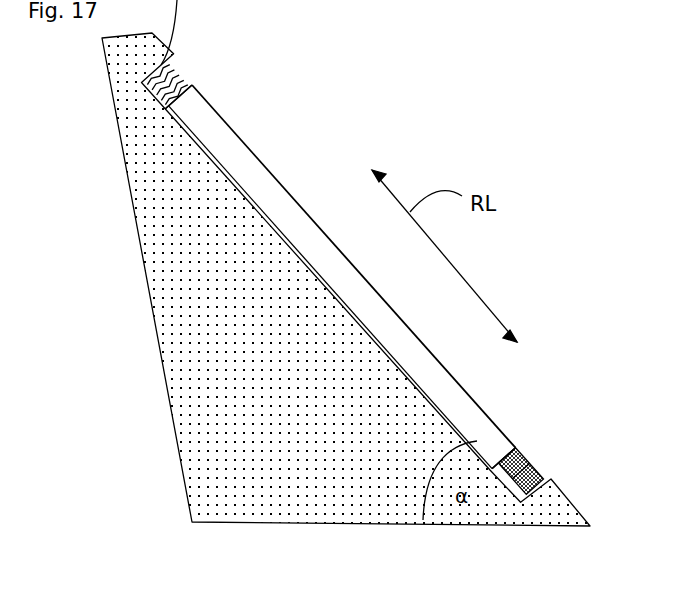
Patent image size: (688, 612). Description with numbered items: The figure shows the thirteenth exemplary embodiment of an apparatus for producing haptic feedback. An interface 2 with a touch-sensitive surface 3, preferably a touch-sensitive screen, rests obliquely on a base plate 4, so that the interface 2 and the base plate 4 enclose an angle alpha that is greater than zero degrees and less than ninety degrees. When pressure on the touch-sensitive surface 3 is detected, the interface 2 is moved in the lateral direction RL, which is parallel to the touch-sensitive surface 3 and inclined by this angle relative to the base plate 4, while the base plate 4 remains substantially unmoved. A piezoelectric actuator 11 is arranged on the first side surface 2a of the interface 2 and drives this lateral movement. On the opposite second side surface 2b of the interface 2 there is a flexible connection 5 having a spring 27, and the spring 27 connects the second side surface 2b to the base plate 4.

The interface 2 is at (333, 273).
The first side surface 2a is at (498, 466).
The second side surface 2b is at (192, 85).
The touch-sensitive surface 3 is at (244, 137).
The base plate 4 is at (327, 524).
The flexible connection 5 is at (158, 88).
The piezoelectric actuator 11 is at (522, 463).
The spring 27 is at (208, 0).